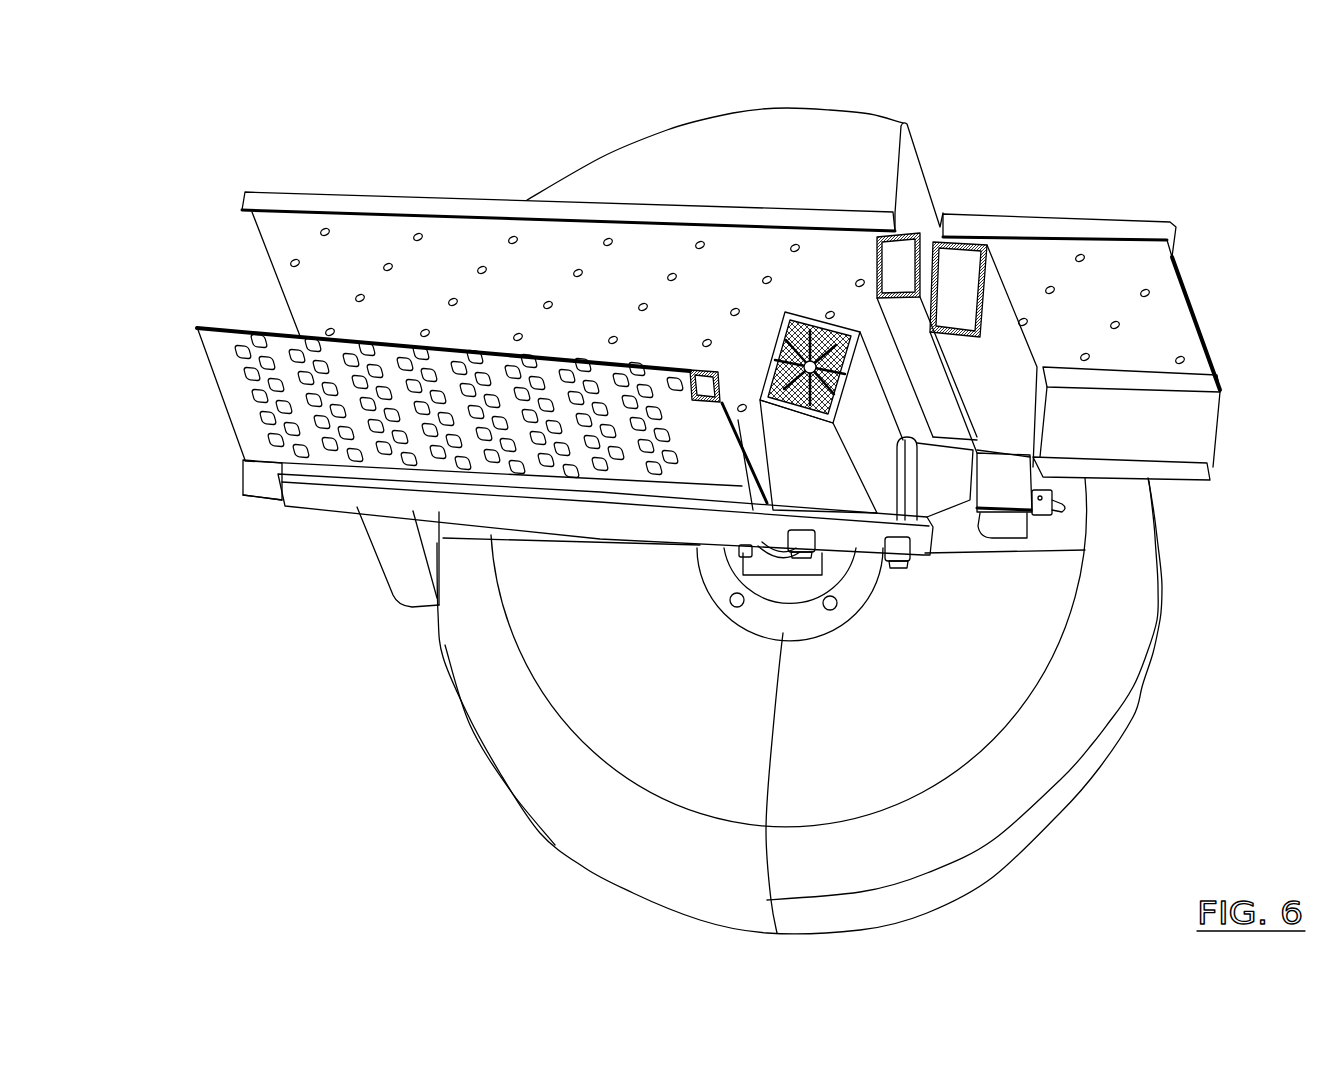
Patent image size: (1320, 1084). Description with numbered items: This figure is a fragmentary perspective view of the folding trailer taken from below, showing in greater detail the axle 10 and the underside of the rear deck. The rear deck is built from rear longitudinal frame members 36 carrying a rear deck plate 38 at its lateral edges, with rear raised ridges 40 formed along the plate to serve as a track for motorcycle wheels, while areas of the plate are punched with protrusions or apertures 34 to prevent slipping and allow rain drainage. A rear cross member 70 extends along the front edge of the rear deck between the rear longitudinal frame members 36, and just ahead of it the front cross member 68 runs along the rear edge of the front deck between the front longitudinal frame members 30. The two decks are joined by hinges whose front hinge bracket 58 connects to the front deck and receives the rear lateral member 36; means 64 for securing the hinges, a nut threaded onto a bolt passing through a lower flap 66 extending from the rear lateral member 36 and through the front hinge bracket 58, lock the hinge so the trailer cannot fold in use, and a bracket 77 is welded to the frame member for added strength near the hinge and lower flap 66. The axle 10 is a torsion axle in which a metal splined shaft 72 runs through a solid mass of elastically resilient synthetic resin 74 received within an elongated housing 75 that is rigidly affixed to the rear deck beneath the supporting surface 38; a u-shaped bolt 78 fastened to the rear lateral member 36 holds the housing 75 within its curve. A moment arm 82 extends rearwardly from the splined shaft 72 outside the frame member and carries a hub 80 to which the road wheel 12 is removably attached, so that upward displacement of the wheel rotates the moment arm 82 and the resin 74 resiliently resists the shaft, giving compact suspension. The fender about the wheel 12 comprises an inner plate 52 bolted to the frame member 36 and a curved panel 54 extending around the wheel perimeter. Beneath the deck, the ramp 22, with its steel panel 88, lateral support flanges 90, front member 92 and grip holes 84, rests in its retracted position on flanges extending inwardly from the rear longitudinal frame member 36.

The axle 10 is at (880, 457).
The road wheel 12 is at (655, 840).
The ramp 22 is at (228, 373).
The longitudinal frame member 30 is at (1180, 427).
The protrusions or apertures 34 is at (388, 266).
The rear longitudinal frame member 36 is at (350, 493).
The rear deck plate 38 is at (547, 240).
The rear raised ridges 40 is at (470, 203).
The inner plate 52 is at (850, 173).
The curved panel 54 is at (397, 537).
The front hinge bracket 58 is at (1082, 549).
The means for securing the hinges 64 is at (1040, 492).
The lower flap 66 is at (1003, 485).
The front cross member 68 is at (995, 302).
The rear cross member 70 is at (968, 262).
The splined shaft 72 is at (915, 275).
The synthetic resin 74 is at (799, 320).
The housing 75 is at (772, 335).
The bracket 77 is at (940, 528).
The u-shaped bolt 78 is at (808, 541).
The hub 80 is at (767, 610).
The moment arm 82 is at (745, 556).
The holes 84 is at (380, 453).
The panel 88 is at (242, 412).
The lateral support flanges 90 is at (260, 477).
The front member 92 is at (722, 443).